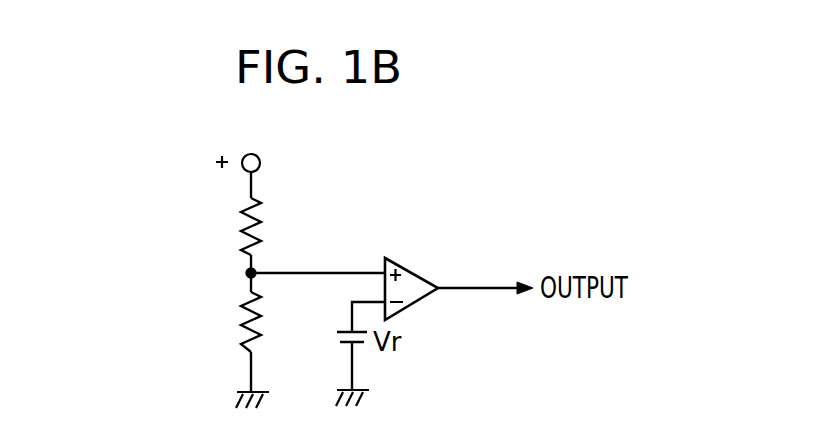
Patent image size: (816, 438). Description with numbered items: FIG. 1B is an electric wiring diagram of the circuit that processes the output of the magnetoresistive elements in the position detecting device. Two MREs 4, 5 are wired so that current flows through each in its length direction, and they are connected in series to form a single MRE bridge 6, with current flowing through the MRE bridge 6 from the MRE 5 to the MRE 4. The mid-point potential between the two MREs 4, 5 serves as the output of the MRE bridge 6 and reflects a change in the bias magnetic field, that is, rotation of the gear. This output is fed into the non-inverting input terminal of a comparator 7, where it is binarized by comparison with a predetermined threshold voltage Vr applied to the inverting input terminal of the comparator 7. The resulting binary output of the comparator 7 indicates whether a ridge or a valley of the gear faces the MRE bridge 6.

The MRE 4 is at (240, 308).
The MRE 5 is at (240, 237).
The MRE bridge 6 is at (161, 210).
The comparator 7 is at (414, 270).